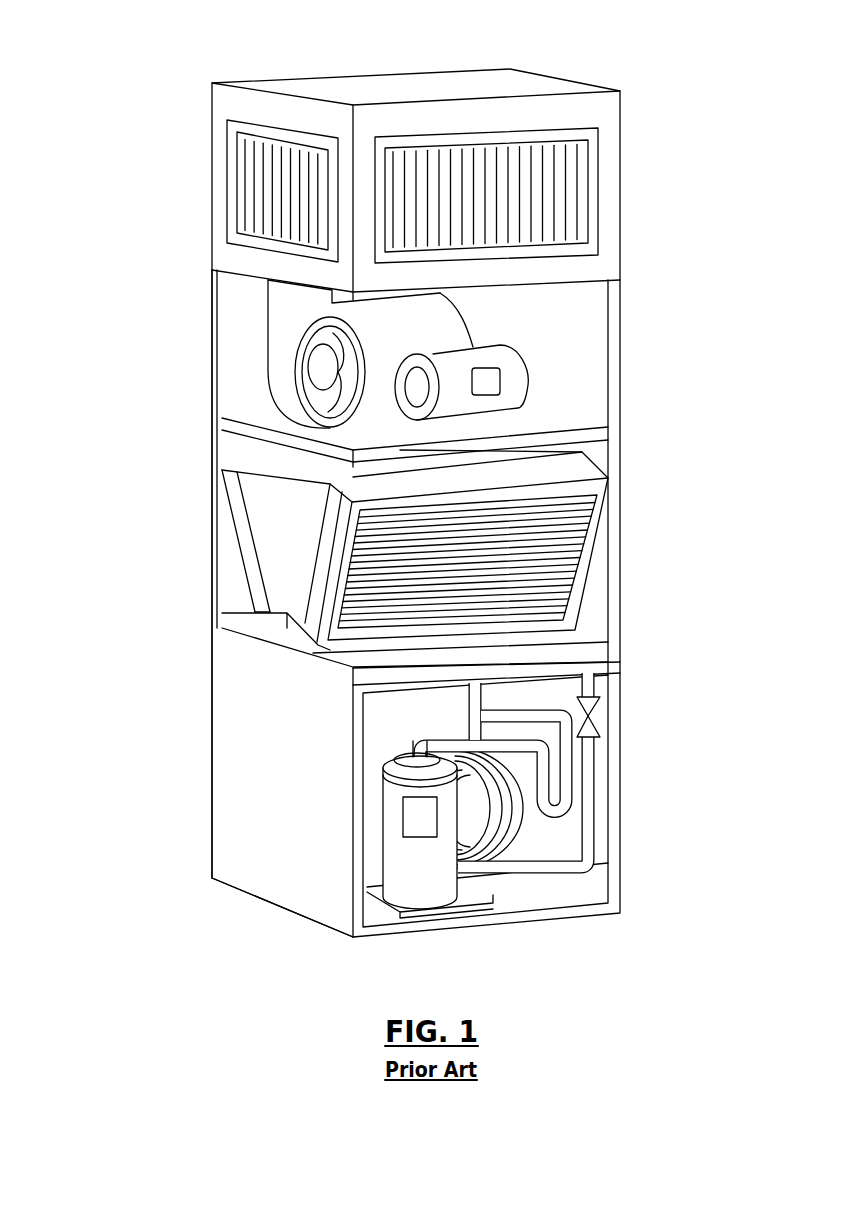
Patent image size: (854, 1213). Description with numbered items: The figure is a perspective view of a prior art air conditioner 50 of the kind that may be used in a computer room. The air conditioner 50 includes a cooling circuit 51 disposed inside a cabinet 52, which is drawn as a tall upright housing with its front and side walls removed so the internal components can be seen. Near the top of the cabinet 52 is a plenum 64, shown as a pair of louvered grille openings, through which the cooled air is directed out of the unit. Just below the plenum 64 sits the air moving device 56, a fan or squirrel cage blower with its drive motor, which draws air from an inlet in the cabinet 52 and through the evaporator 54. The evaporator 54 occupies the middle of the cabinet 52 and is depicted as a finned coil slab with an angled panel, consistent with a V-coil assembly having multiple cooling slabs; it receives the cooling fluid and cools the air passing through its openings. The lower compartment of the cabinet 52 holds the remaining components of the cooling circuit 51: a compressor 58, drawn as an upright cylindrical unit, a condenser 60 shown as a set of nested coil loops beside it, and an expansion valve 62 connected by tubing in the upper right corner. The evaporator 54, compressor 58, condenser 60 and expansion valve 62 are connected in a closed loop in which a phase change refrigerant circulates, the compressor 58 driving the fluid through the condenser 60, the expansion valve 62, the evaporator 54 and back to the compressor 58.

The air conditioner 50 is at (148, 50).
The cooling circuit 51 is at (652, 112).
The cabinet 52 is at (212, 320).
The evaporator 54 is at (305, 525).
The air moving device 56 is at (448, 328).
The compressor 58 is at (392, 830).
The condenser 60 is at (498, 827).
The expansion valve 62 is at (600, 710).
The plenum 64 is at (553, 192).